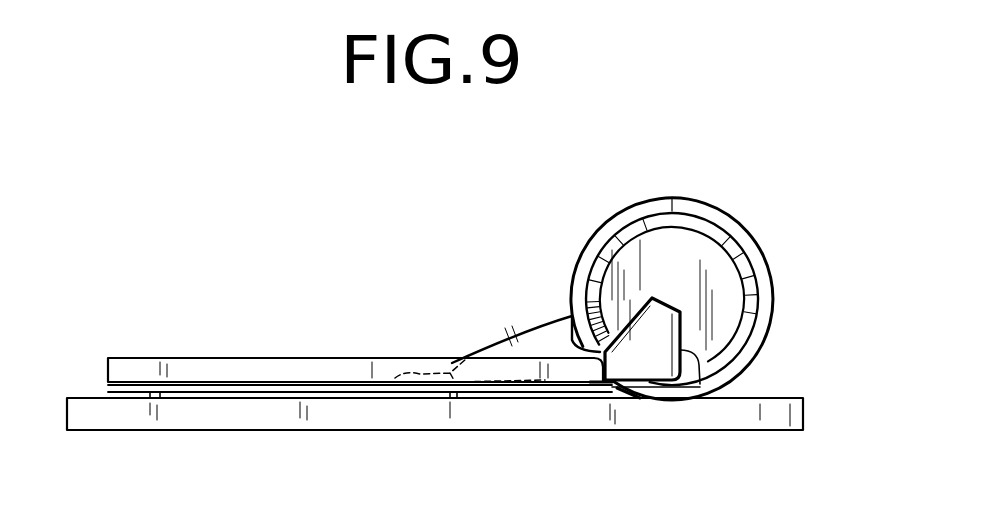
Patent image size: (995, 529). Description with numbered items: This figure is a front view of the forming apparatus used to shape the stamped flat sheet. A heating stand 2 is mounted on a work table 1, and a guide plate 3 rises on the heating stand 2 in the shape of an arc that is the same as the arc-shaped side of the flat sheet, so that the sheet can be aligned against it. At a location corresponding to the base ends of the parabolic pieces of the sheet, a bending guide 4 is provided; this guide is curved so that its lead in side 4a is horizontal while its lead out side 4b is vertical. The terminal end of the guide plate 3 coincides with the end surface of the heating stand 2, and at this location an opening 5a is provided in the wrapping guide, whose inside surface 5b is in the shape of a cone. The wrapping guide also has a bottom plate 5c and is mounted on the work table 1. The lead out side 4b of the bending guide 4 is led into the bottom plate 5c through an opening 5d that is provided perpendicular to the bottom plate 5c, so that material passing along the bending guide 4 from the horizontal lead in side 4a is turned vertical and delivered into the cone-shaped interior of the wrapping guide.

The work table 1 is at (188, 413).
The heating stand 2 is at (233, 388).
The guide plate 3 is at (308, 370).
The bending guide 4 is at (525, 338).
The lead in side 4a is at (392, 400).
The lead out side 4b is at (645, 357).
The opening 5a is at (617, 393).
The inside surface 5b is at (747, 272).
The bottom plate 5c is at (730, 327).
The opening 5d is at (690, 367).